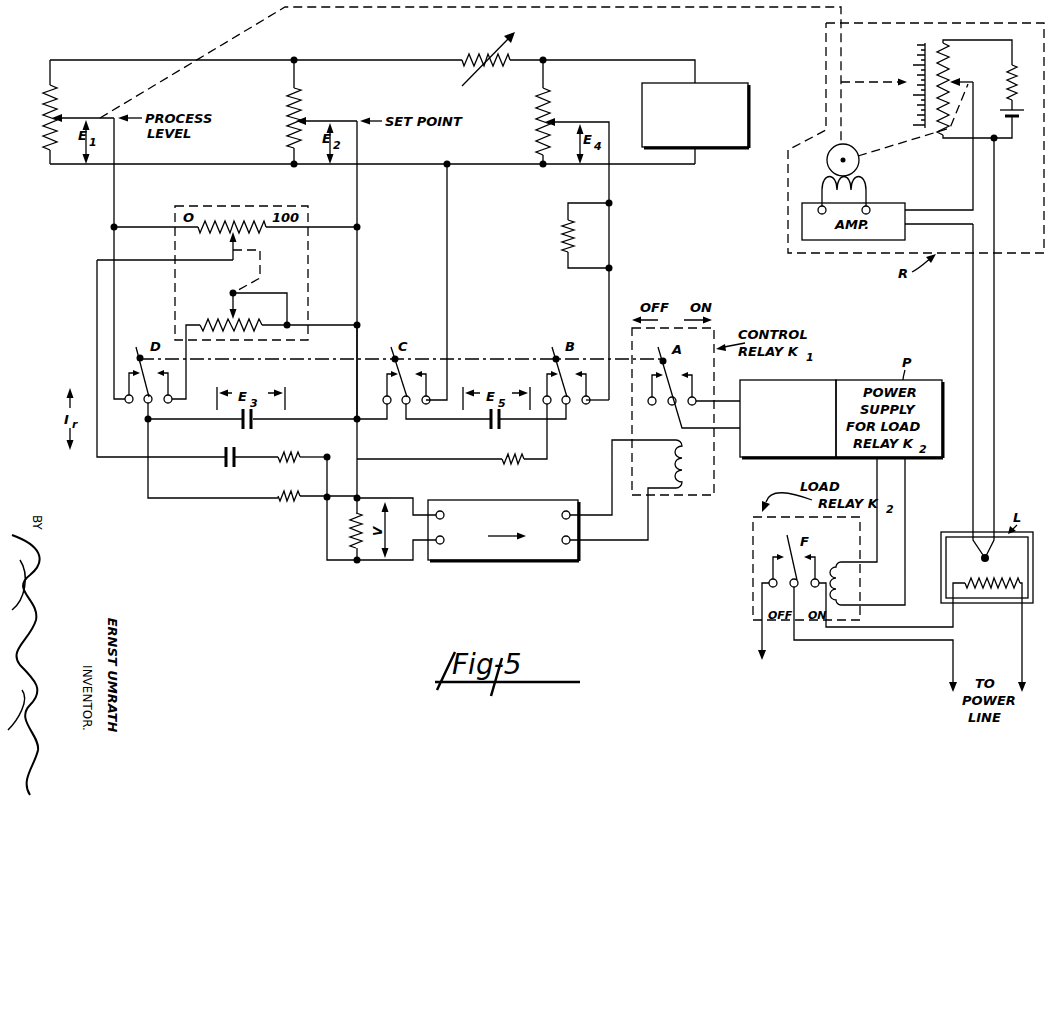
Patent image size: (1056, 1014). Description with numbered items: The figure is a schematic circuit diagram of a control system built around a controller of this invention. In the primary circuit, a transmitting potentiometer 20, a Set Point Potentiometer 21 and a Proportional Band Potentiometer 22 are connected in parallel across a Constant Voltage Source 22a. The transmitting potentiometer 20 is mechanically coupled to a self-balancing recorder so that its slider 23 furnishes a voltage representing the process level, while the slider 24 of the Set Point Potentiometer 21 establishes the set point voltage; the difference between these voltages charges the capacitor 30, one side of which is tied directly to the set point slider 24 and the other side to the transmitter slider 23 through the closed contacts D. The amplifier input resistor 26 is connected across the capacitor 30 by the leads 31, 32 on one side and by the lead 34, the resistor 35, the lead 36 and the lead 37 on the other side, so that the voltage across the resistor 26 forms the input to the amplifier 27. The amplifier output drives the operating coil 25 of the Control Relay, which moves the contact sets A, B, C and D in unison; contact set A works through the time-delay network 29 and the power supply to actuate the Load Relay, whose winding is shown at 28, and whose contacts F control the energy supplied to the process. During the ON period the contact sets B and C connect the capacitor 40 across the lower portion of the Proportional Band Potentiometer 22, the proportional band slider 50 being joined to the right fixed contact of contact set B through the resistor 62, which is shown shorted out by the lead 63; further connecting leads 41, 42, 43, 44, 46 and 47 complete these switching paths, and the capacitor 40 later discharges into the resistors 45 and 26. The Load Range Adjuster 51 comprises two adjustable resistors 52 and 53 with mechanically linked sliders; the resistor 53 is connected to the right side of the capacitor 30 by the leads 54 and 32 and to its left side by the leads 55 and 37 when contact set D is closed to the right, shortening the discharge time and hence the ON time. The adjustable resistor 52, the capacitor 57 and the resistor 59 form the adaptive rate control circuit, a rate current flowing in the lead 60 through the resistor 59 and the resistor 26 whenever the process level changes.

The transmitting potentiometer 20 is at (68, 102).
The set point potentiometer 21 is at (365, 48).
The proportional band potentiometer 22 is at (652, 50).
The constant voltage source 22a is at (748, 119).
The slider 23 is at (78, 118).
The slider 24 is at (320, 120).
The operating coil 25 is at (684, 473).
The amplifier input resistor 26 is at (350, 538).
The amplifier 27 is at (482, 562).
The load relay coil 28 is at (845, 577).
The time-delay network 29 is at (813, 380).
The capacitor 30 is at (240, 425).
The lead 31 is at (357, 446).
The lead 32 is at (296, 419).
The lead 34 is at (327, 529).
The resistor 35 is at (280, 504).
The lead 36 is at (148, 480).
The lead 37 is at (157, 420).
The capacitor 40 is at (504, 426).
The conductor 41 is at (362, 420).
The conductor 42 is at (408, 420).
The conductor 43 is at (327, 472).
The conductor 44 is at (420, 461).
The resistor 45 is at (503, 455).
The conductor 46 is at (540, 460).
The conductor 47 is at (555, 420).
The proportional band slider 50 is at (568, 122).
The Load Range Adjuster 51 is at (312, 210).
The adjustable resistor 52 is at (263, 233).
The adjustable resistor 53 is at (224, 318).
The lead 54 is at (325, 325).
The lead 55 is at (187, 368).
The capacitor 57 is at (224, 464).
The resistor 59 is at (289, 453).
The lead 60 is at (97, 348).
The resistor 62 is at (562, 240).
The lead 63 is at (610, 222).